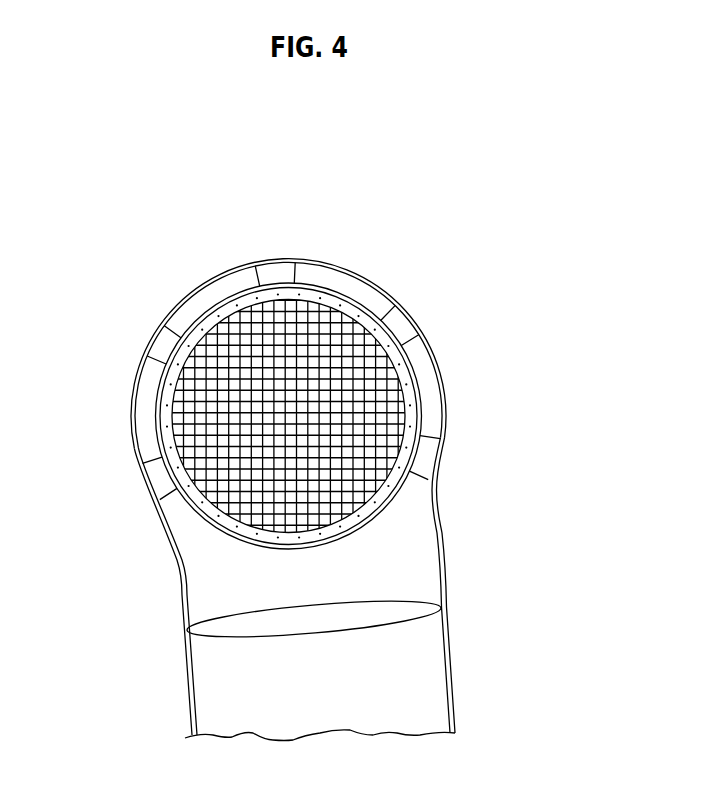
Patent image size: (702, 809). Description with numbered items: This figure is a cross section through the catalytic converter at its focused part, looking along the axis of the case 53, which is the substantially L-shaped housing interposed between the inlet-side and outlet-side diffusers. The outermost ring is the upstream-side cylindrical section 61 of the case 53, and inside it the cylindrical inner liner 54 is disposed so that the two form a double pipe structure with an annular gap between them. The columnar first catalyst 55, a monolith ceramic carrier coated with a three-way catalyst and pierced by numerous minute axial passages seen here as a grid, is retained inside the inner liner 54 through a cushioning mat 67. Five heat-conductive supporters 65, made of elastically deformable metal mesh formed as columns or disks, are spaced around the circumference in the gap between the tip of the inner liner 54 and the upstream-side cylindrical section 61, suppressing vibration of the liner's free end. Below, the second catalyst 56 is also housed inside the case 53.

The case 53 is at (458, 553).
The inner liner 54 is at (423, 420).
The first catalyst 55 is at (317, 318).
The second catalyst 56 is at (430, 673).
The upstream-side cylindrical section 61 is at (438, 363).
The supporters 65 is at (277, 275).
The mat 67 is at (415, 382).